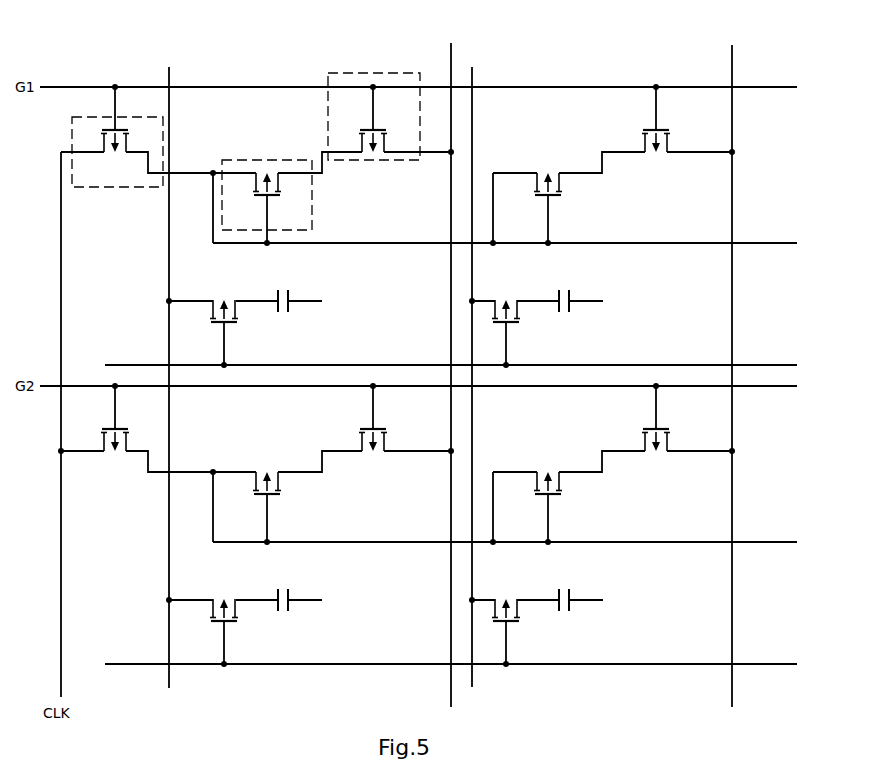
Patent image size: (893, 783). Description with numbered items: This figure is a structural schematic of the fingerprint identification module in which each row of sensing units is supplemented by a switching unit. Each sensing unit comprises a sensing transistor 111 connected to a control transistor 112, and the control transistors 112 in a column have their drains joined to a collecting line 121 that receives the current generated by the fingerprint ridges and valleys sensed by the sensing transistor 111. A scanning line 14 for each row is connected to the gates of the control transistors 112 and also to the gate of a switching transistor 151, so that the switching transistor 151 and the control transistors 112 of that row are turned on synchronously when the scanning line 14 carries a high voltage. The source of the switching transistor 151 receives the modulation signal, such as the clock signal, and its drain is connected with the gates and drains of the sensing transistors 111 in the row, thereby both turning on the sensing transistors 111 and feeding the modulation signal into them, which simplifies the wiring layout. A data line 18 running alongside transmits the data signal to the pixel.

The scanning line 14 is at (123, 86).
The data line 18 is at (169, 80).
The sensing transistor 111 is at (272, 160).
The control transistor 112 is at (373, 73).
The collecting line 121 is at (452, 58).
The switching transistor 151 is at (117, 188).